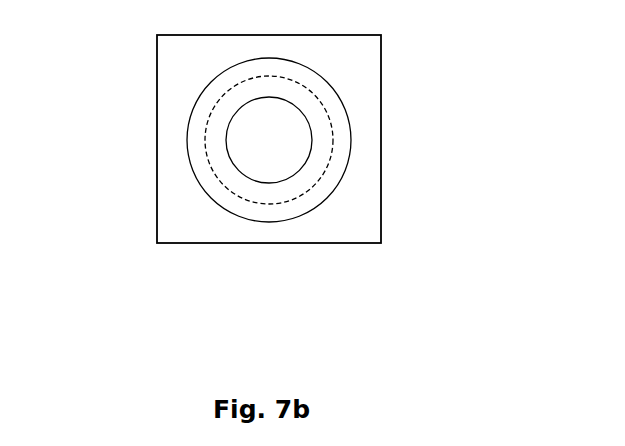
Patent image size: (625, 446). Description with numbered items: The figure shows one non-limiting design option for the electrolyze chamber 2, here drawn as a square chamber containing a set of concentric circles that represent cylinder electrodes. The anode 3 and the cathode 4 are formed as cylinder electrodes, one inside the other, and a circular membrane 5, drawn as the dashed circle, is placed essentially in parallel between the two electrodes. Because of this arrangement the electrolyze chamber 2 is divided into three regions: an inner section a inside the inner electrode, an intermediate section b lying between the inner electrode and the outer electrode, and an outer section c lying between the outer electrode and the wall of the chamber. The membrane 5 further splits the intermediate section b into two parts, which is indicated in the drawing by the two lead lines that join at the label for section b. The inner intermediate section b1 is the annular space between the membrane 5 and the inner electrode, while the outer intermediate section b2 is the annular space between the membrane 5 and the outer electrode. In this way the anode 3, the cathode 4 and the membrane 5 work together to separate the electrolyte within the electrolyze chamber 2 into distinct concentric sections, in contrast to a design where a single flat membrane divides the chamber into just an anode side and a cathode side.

The electrolyze chamber 2 is at (281, 159).
The anode 3 is at (300, 109).
The cathode 4 is at (351, 138).
The membrane 5 is at (314, 184).
The inner section a is at (260, 118).
The intermediate section b is at (188, 328).
The inner intermediate section b1 is at (242, 182).
The outer intermediate section b2 is at (298, 208).
The outer section c is at (174, 189).